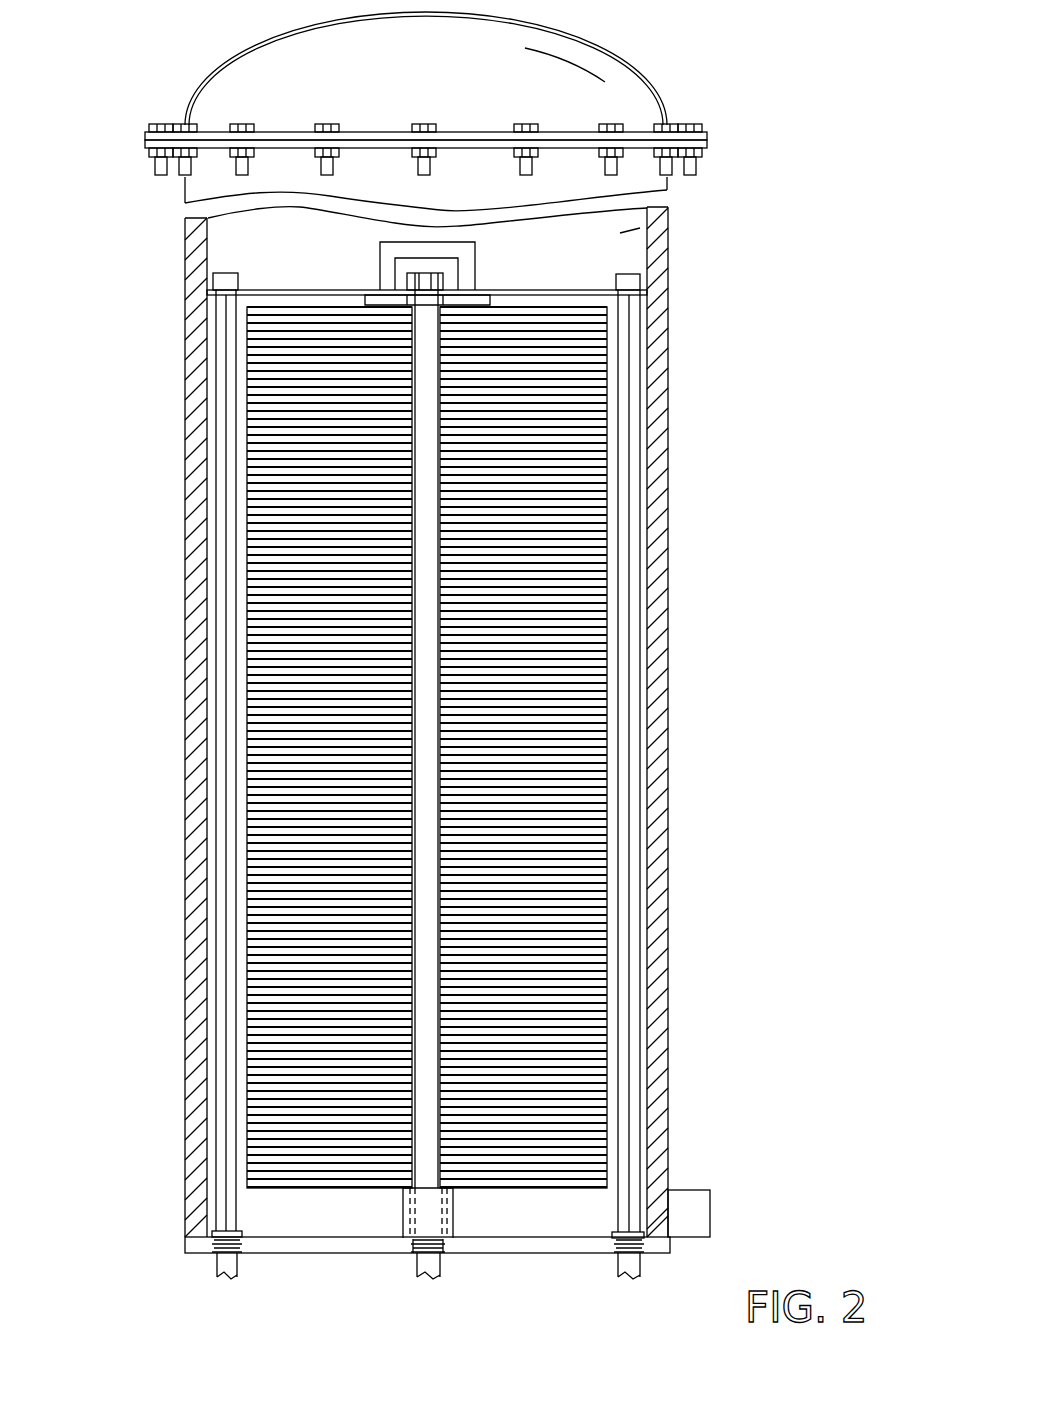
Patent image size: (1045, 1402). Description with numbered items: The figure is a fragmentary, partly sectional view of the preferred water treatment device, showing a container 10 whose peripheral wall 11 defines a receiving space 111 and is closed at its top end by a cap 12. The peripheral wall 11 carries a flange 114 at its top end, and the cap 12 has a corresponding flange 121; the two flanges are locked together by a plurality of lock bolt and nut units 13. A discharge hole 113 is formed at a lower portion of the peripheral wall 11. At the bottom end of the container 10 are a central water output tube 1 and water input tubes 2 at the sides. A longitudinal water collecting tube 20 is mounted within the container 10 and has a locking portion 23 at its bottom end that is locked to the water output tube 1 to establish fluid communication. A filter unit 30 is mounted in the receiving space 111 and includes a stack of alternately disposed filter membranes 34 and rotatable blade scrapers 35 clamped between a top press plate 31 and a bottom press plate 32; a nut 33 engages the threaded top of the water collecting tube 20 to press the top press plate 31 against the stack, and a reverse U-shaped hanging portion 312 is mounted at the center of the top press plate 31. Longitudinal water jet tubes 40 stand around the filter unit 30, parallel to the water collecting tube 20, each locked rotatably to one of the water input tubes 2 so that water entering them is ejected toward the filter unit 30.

The water output tube 1 is at (417, 1266).
The water input tubes 2 is at (220, 1265).
The container 10 is at (675, 905).
The peripheral wall 11 is at (668, 735).
The cap 12 is at (605, 50).
The lock bolt and nut units 13 is at (685, 122).
The longitudinal water collecting tube 20 is at (460, 1200).
The locking portion 23 is at (462, 1255).
The filter unit 30 is at (283, 290).
The top press plate 31 is at (607, 300).
The bottom press plate 32 is at (585, 1245).
The nut 33 is at (445, 274).
The filter membranes 34 is at (607, 503).
The rotatable blade scrapers 35 is at (607, 495).
The longitudinal water jet tubes 40 is at (220, 610).
The receiving space 111 is at (640, 228).
The discharge hole 113 is at (697, 1213).
The flange 114 is at (707, 147).
The flange 121 is at (707, 137).
The hanging portion 312 is at (380, 243).